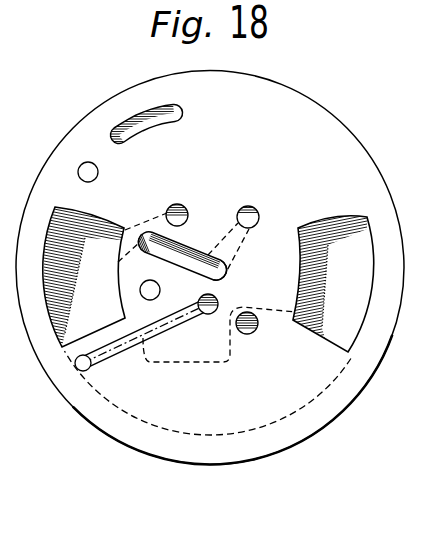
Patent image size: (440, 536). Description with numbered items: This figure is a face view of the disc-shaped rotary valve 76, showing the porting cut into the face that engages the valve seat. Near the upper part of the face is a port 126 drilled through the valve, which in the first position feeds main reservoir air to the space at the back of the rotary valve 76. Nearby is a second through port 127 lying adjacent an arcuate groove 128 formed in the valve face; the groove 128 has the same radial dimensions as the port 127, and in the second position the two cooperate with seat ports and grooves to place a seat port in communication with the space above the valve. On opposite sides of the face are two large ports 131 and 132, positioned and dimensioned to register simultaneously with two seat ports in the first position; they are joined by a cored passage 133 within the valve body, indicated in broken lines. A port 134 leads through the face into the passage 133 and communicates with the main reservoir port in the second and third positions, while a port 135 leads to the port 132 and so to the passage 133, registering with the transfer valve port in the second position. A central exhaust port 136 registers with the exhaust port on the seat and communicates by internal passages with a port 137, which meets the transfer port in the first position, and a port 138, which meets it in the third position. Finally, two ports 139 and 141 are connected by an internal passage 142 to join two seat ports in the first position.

The rotary valve 76 is at (343, 122).
The port 126 is at (160, 290).
The second through port 127 is at (98, 172).
The groove 128 is at (181, 118).
The port 131 is at (333, 274).
The port 132 is at (85, 286).
The cored passage 133 is at (305, 409).
The port 134 is at (253, 333).
The port 135 is at (188, 215).
The central exhaust port 136 is at (220, 268).
The port 137 is at (264, 209).
The port 138 is at (150, 253).
The port 139 is at (90, 369).
The port 141 is at (213, 314).
The internal passage 142 is at (150, 341).